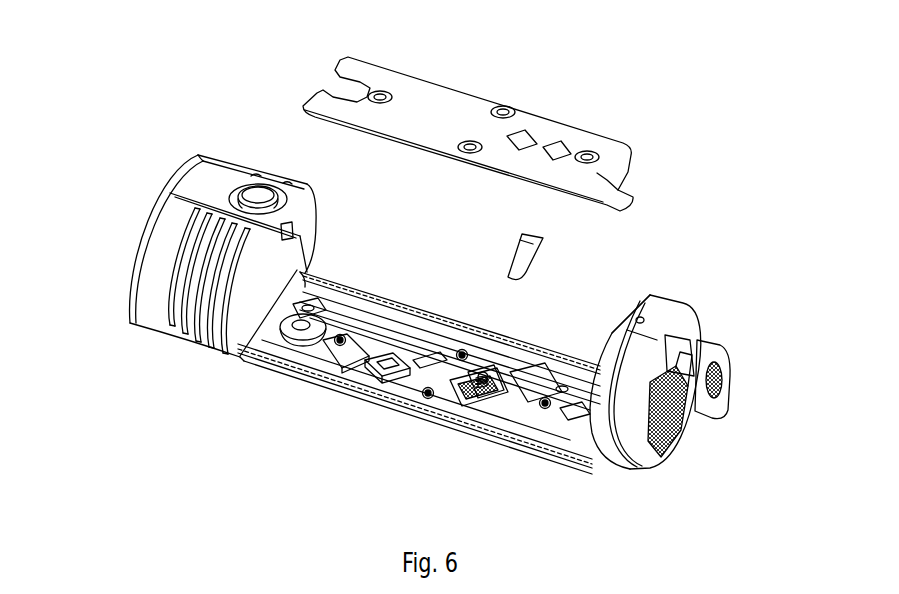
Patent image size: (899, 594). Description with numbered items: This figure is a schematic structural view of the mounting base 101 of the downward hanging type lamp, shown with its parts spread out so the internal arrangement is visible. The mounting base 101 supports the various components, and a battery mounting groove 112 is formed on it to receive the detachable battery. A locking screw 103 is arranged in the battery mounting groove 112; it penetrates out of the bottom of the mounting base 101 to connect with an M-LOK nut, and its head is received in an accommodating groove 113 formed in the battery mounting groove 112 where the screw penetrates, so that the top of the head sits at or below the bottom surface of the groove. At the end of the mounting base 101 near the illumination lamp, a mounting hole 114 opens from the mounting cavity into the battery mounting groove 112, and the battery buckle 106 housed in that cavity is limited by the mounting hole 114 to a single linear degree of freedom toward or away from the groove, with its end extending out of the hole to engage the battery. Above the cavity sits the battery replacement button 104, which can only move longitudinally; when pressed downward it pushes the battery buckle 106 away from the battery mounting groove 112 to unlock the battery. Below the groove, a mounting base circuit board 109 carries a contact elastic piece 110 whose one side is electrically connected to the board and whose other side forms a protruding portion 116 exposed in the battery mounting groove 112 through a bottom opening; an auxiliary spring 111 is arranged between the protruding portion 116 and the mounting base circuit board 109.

The mounting base 101 is at (228, 353).
The locking screw 103 is at (590, 407).
The battery replacement button 104 is at (260, 193).
The battery buckle 106 is at (270, 236).
The mounting base circuit board 109 is at (420, 368).
The contact elastic piece 110 is at (509, 168).
The auxiliary spring 111 is at (497, 377).
The battery mounting groove 112 is at (272, 290).
The accommodating groove 113 is at (535, 418).
The mounting hole 114 is at (262, 238).
The protruding portion 116 is at (540, 240).